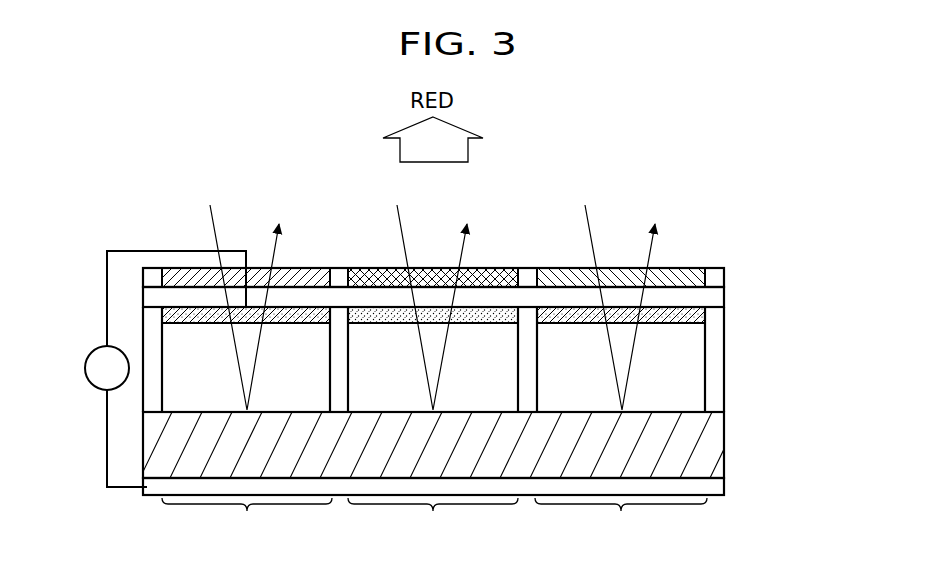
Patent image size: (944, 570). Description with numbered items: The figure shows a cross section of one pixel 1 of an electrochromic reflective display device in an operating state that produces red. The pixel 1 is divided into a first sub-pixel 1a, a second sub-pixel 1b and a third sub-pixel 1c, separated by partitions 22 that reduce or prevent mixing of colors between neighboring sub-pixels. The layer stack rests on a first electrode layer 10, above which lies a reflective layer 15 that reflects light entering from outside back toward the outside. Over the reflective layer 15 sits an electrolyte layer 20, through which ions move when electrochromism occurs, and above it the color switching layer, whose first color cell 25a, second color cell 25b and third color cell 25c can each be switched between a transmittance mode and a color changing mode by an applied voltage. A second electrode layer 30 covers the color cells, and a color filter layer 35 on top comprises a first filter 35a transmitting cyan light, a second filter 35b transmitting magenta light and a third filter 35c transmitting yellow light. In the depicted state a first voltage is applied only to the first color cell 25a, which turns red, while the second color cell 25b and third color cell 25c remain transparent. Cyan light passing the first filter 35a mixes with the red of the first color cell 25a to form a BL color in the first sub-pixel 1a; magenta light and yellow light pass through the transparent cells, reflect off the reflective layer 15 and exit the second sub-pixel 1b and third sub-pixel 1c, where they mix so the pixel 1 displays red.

The pixel 1 is at (778, 201).
The first sub-pixel 1a is at (247, 518).
The second sub-pixel 1b is at (433, 518).
The third sub-pixel 1c is at (621, 518).
The first electrode layer 10 is at (722, 487).
The reflective layer 15 is at (722, 445).
The electrolyte layer 20 is at (700, 377).
The partition 22 is at (722, 338).
The first color cell 25a is at (303, 313).
The second color cell 25b is at (490, 313).
The third color cell 25c is at (678, 313).
The second electrode layer 30 is at (724, 297).
The color filter layer 35 is at (735, 278).
The first filter 35a is at (193, 279).
The second filter 35b is at (380, 279).
The third filter 35c is at (570, 277).